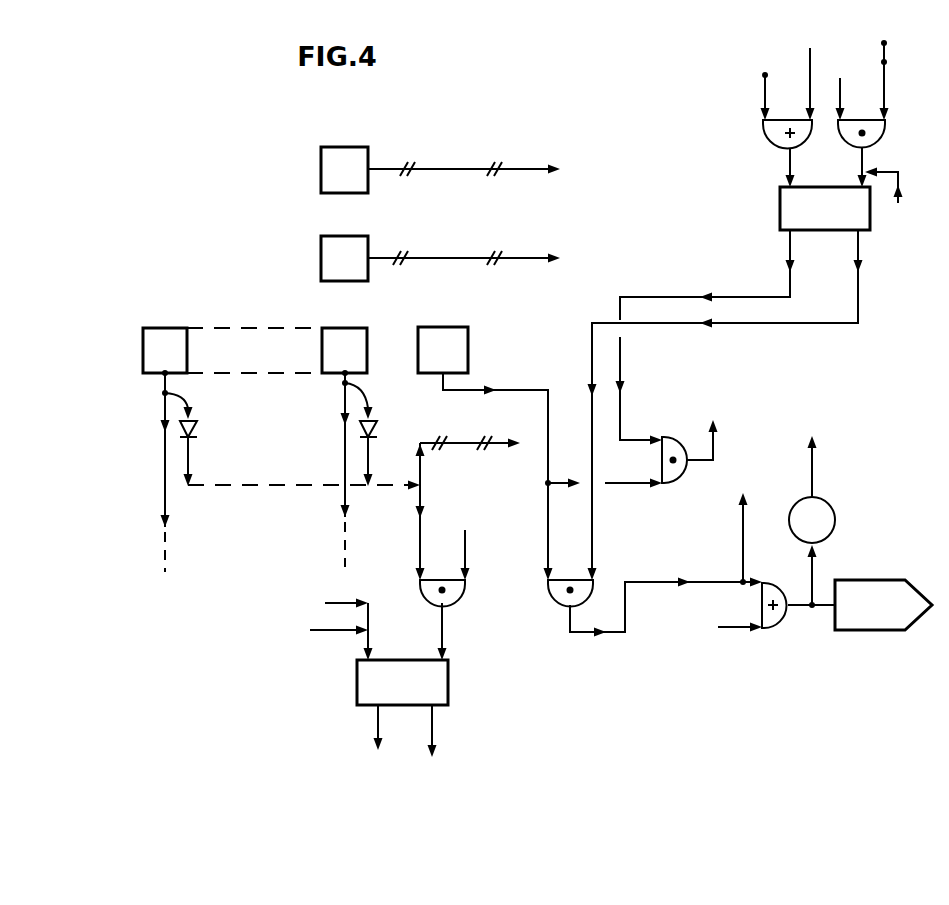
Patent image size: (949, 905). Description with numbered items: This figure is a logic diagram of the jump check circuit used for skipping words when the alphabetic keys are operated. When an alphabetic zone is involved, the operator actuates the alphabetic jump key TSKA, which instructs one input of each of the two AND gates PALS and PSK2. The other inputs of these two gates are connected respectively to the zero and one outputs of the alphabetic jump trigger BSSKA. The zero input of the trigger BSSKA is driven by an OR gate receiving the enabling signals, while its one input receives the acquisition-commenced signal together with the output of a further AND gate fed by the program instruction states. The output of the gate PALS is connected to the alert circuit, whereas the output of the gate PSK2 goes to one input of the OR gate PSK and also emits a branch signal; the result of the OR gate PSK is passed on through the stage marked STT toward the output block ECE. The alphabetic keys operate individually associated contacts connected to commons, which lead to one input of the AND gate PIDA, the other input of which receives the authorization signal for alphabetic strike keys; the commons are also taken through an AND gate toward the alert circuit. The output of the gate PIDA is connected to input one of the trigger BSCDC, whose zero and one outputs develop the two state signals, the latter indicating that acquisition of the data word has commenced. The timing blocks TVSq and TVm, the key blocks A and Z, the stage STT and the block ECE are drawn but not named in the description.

The sequence timer TVSq is at (458, 170).
The measurement timer TVm is at (464, 258).
The start block A is at (281, 450).
The block Z is at (349, 447).
The alphabetic jump key TSKA is at (499, 453).
The alphabetic jump trigger BSSKA is at (758, 301).
The AND gate PALS is at (664, 450).
The AND gate PIDA is at (473, 538).
The AND gate PSK2 is at (667, 555).
The OR gate PSK is at (752, 595).
The STT indicator STT is at (812, 481).
The ECE output ECE is at (883, 605).
The trigger BSCDC is at (382, 679).